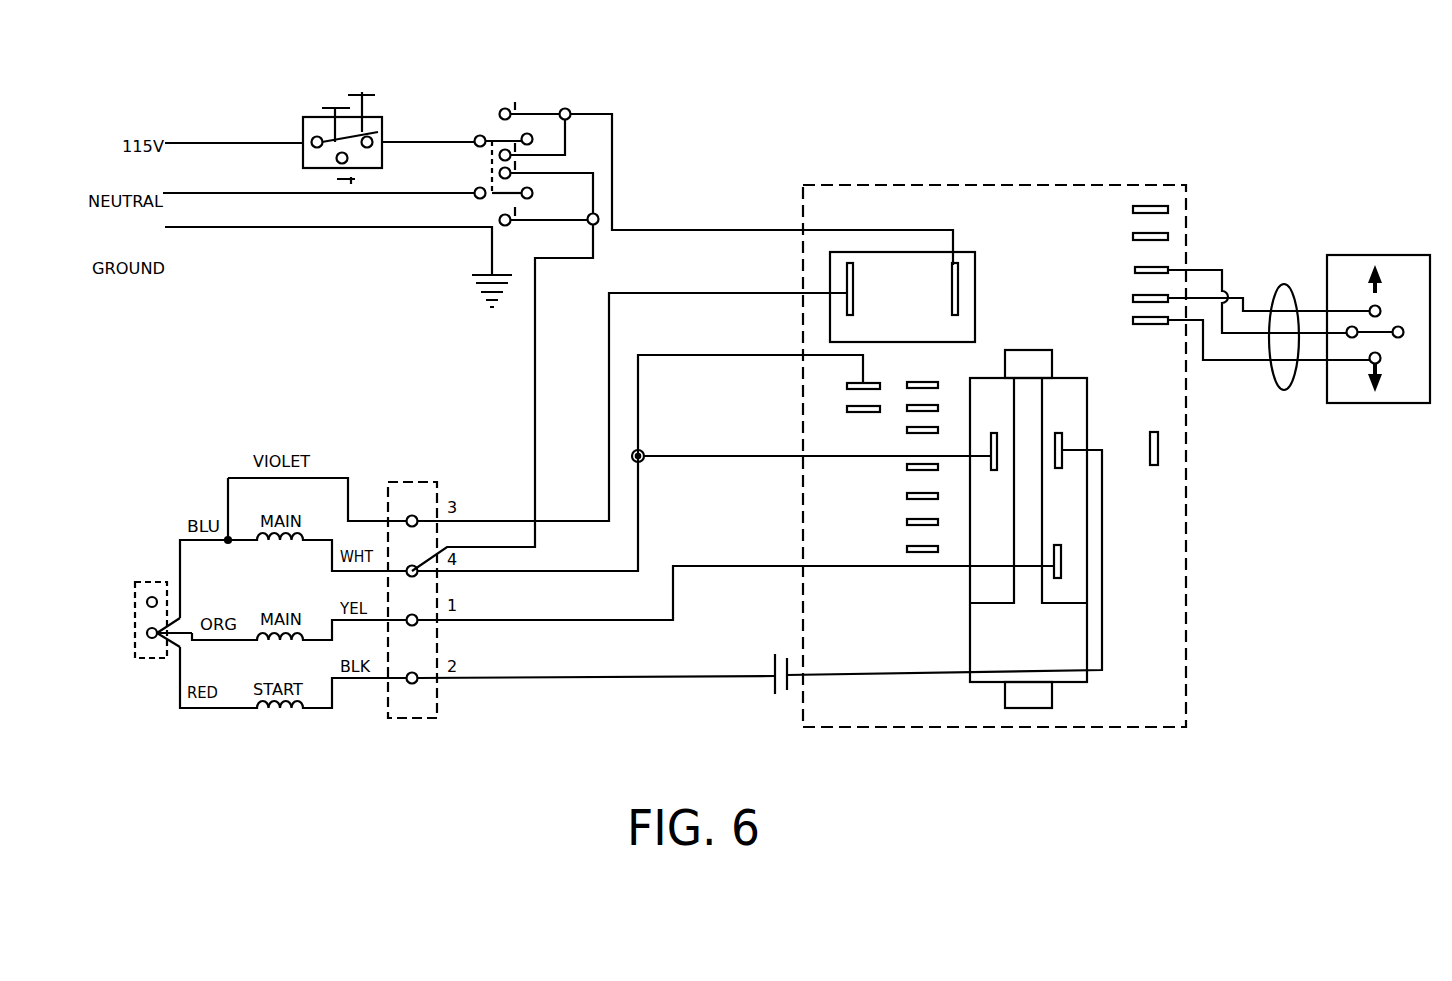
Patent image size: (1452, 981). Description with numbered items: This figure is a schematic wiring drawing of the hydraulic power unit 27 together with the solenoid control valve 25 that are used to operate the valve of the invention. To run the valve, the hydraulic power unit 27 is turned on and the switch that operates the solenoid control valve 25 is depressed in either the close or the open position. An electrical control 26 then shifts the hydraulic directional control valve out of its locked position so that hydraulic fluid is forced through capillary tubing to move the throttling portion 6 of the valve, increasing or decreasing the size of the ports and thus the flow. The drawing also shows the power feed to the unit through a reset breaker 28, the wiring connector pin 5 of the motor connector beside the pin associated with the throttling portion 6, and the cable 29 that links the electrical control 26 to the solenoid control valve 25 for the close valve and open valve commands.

The motor connector pin 5 is at (155, 632).
The throttling portion 6 is at (137, 603).
The solenoid control valve 25 is at (1367, 227).
The electrical control 26 is at (957, 182).
The hydraulic power unit 27 is at (515, 72).
The reset circuit breaker 28 is at (303, 127).
The cable 29 is at (1277, 384).